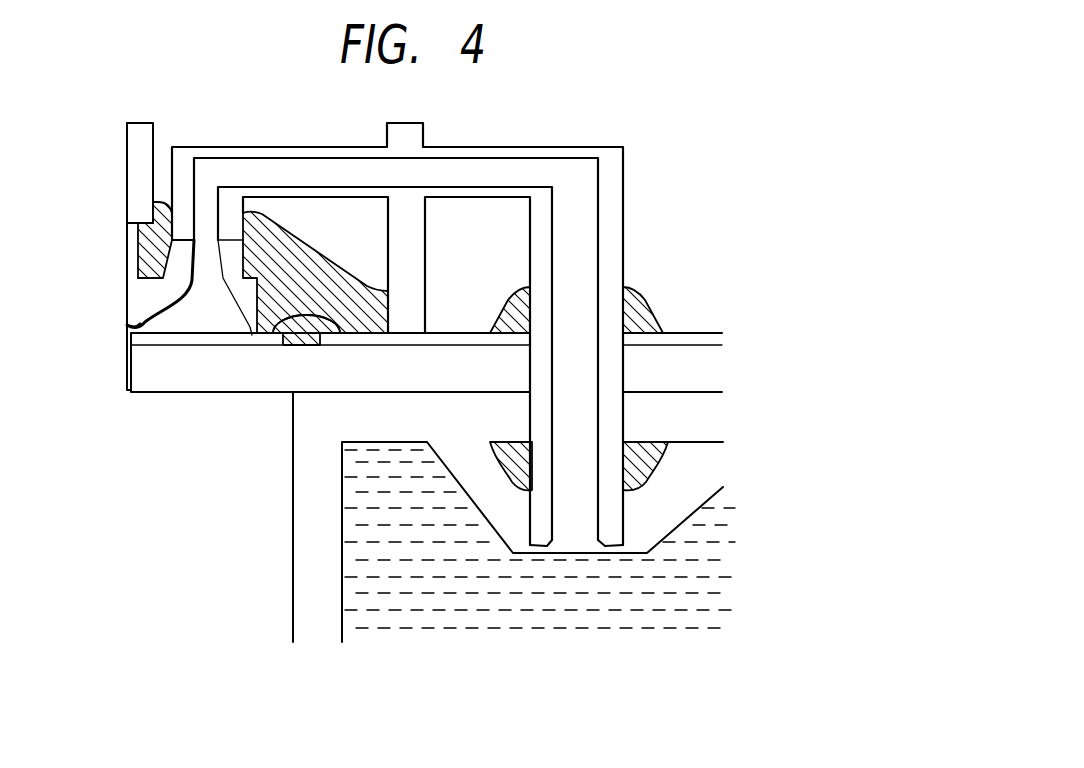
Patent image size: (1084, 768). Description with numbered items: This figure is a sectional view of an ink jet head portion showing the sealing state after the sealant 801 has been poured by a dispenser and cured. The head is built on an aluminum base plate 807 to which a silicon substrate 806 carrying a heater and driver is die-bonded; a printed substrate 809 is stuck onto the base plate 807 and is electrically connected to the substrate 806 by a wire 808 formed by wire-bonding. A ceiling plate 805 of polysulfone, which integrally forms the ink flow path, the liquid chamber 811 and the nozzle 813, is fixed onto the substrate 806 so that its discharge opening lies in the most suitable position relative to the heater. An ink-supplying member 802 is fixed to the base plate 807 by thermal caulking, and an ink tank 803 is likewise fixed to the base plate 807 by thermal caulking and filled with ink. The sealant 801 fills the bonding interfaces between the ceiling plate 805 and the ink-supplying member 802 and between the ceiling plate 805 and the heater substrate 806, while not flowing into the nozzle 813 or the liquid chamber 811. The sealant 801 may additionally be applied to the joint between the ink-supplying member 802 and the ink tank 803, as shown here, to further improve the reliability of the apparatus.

The sealant 801 is at (292, 230).
The ink-supplying member 802 is at (617, 165).
The ink tank 803 is at (293, 550).
The ceiling plate 805 is at (138, 290).
The substrate 806 is at (205, 340).
The base plate 807 is at (252, 378).
The wire 808 is at (300, 347).
The printed substrate 809 is at (675, 338).
The liquid chamber 811 is at (183, 317).
The nozzle 813 is at (128, 323).